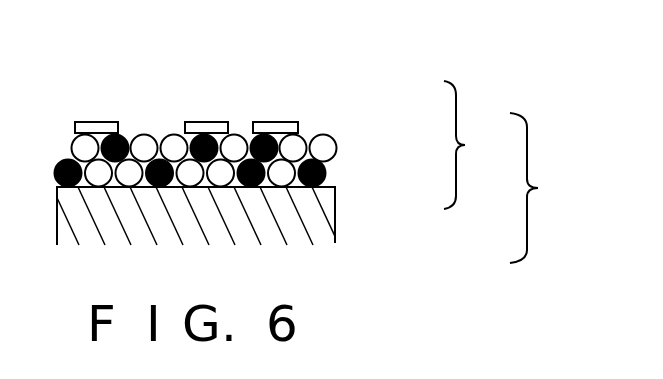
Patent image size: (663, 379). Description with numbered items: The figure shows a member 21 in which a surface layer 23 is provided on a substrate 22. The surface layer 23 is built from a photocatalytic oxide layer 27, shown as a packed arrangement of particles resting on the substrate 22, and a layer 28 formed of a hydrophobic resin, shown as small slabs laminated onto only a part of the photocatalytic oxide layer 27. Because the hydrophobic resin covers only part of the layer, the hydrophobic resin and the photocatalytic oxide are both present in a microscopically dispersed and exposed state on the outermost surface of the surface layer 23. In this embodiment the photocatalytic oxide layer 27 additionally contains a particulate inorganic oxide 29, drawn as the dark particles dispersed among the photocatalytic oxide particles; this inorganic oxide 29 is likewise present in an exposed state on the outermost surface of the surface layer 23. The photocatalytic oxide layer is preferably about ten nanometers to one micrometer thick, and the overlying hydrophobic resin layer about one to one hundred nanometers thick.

The member 21 is at (590, 210).
The substrate 22 is at (327, 222).
The surface layer 23 is at (480, 145).
The photocatalytic oxide layer 27 is at (326, 148).
The layer formed of a hydrophobic resin 28 is at (290, 125).
The inorganic oxide 29 is at (320, 170).